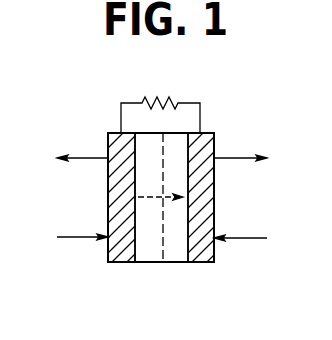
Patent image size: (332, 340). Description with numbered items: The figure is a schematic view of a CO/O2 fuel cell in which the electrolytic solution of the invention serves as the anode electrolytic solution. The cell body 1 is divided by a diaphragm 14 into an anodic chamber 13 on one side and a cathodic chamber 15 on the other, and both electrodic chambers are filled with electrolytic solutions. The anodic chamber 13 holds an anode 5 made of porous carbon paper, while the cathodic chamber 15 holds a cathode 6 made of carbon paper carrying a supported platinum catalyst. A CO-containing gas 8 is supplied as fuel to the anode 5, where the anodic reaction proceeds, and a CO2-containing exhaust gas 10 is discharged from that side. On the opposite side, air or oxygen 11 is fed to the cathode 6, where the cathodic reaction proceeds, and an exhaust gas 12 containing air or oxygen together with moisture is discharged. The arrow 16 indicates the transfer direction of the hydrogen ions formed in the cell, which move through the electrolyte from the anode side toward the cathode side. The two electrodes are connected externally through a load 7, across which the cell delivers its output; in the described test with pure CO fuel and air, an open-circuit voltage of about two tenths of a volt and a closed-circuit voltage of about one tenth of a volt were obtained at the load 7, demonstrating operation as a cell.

The cell body 1 is at (171, 257).
The anode 5 is at (120, 258).
The cathode 6 is at (206, 258).
The load 7 is at (140, 101).
The CO-containing gas 8 is at (75, 239).
The exhaust gas 10 is at (82, 157).
The air 11 is at (250, 240).
The exhaust gas 12 is at (243, 157).
The anodic chamber 13 is at (142, 257).
The diaphragm 14 is at (163, 257).
The cathodic chamber 15 is at (182, 257).
The transfer direction of hydrogen ion 16 is at (169, 197).